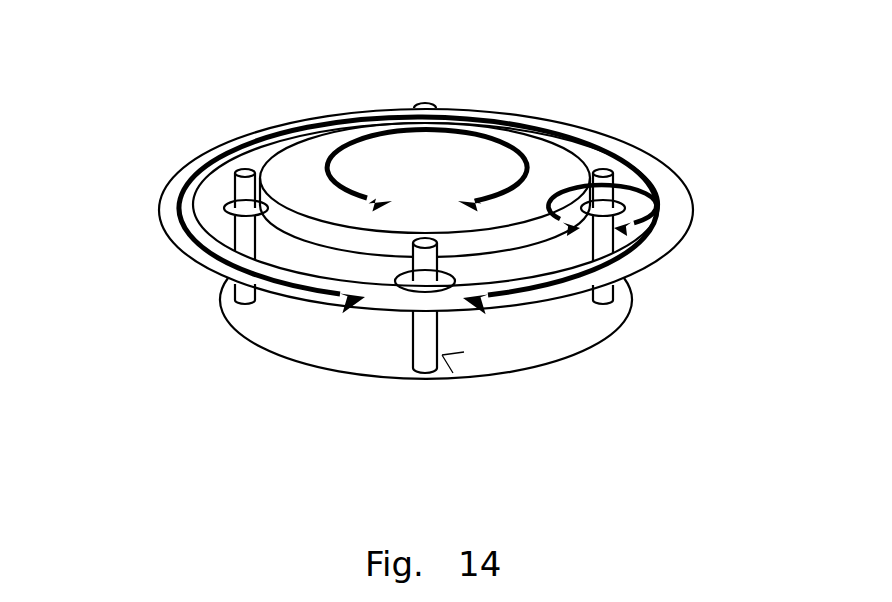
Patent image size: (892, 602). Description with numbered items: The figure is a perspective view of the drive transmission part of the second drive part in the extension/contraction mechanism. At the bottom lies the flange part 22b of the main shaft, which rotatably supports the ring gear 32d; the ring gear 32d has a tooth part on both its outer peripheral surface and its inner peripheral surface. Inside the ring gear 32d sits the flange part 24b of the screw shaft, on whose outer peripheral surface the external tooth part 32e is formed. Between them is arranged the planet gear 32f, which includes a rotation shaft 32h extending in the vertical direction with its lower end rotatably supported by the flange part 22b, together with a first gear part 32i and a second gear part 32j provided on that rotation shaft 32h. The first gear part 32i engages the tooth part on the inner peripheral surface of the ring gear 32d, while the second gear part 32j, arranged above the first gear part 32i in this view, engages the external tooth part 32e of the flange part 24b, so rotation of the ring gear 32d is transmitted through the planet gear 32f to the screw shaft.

The flange part 24b is at (321, 138).
The ring gear 32d is at (678, 215).
The flange part 22b is at (577, 335).
The second gear part 32j is at (250, 192).
The external tooth part 32e is at (490, 228).
The first gear part 32i is at (405, 282).
The rotation shaft 32h is at (427, 357).
The planet gear 32f is at (442, 355).